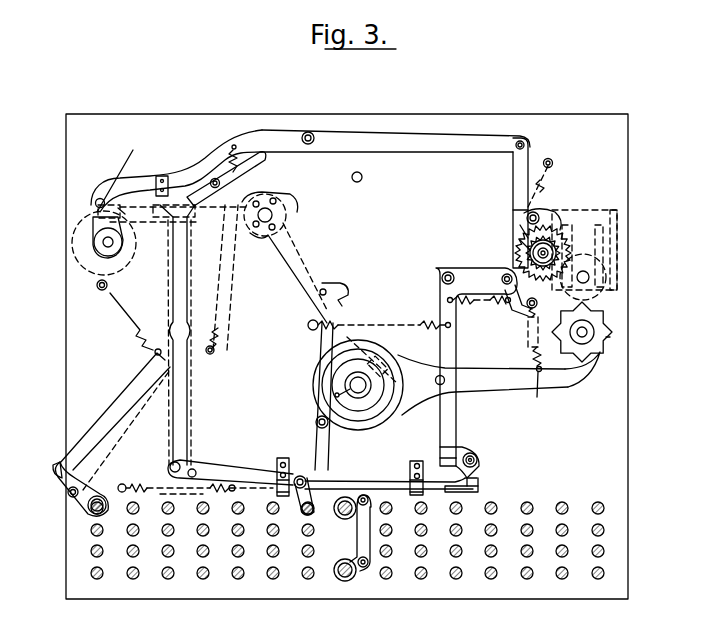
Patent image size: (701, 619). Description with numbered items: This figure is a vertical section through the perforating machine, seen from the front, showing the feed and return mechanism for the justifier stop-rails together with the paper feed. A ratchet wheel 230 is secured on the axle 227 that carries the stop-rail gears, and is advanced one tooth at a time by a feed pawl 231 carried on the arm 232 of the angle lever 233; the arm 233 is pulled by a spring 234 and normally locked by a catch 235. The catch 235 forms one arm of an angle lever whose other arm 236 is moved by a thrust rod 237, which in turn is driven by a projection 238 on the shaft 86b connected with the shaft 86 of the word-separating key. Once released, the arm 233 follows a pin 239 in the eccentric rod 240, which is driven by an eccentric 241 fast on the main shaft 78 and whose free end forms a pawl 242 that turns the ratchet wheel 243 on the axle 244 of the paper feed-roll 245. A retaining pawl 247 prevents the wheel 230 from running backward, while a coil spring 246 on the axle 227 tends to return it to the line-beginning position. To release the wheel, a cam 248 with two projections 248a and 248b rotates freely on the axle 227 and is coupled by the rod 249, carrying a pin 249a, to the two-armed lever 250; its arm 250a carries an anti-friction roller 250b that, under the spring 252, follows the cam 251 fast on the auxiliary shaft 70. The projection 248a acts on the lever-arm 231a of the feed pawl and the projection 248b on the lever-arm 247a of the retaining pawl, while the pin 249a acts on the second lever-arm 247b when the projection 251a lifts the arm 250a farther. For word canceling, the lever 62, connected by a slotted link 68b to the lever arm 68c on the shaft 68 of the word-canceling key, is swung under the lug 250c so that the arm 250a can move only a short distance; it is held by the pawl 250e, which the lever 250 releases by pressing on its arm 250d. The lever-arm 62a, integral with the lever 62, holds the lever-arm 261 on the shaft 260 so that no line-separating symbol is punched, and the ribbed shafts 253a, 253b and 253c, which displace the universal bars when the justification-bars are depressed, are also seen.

The two-armed lever 250 is at (418, 137).
The lever arm 250a is at (207, 146).
The anti-friction roller 250b is at (100, 199).
The lug 250c is at (164, 178).
The arm of pawl 250d is at (270, 160).
The pawl 250e is at (287, 257).
The cam 251 is at (118, 254).
The cam projection 251a is at (132, 177).
The lever 62 is at (187, 248).
The lever-arm 62a is at (115, 413).
The spring 252 is at (222, 300).
The auxiliary shaft 70 is at (97, 287).
The lever-arm 261 is at (62, 480).
The shaft 260 is at (90, 505).
The shaft 68 is at (303, 514).
The slotted link 68b is at (243, 466).
The lever arm 68c is at (284, 497).
The projection 238 is at (338, 503).
The shaft 86 is at (351, 574).
The shaft 86b is at (347, 499).
The shaft 253a is at (388, 511).
The shaft 253b is at (388, 532).
The shaft 253c is at (389, 556).
The main shaft 78 is at (335, 395).
The eccentric 241 is at (381, 427).
The pawl 242 is at (580, 370).
The pin 239 is at (439, 385).
The spring 234 is at (388, 327).
The rod 249 is at (528, 145).
The pin 249a is at (513, 210).
The retaining pawl 247 is at (545, 212).
The lever-arm 247a is at (527, 224).
The second lever-arm 247b is at (525, 205).
The coil spring 246 is at (557, 240).
The cam 248 is at (560, 240).
The cam projection 248a is at (550, 334).
The cam projection 248b is at (522, 248).
The axle 227 is at (548, 251).
The paper feed-roll 245 is at (600, 302).
The axle 244 is at (588, 331).
The ratchet wheel 243 is at (612, 338).
The ratchet wheel 230 is at (512, 263).
The feed pawl 231 is at (500, 271).
The lever-arm 231a is at (510, 294).
The arm 232 is at (477, 288).
The eccentric rod 240 is at (537, 391).
The angle lever arm 233 is at (457, 402).
The catch 235 is at (462, 458).
The arm 236 is at (478, 473).
The thrust rod 237 is at (479, 490).